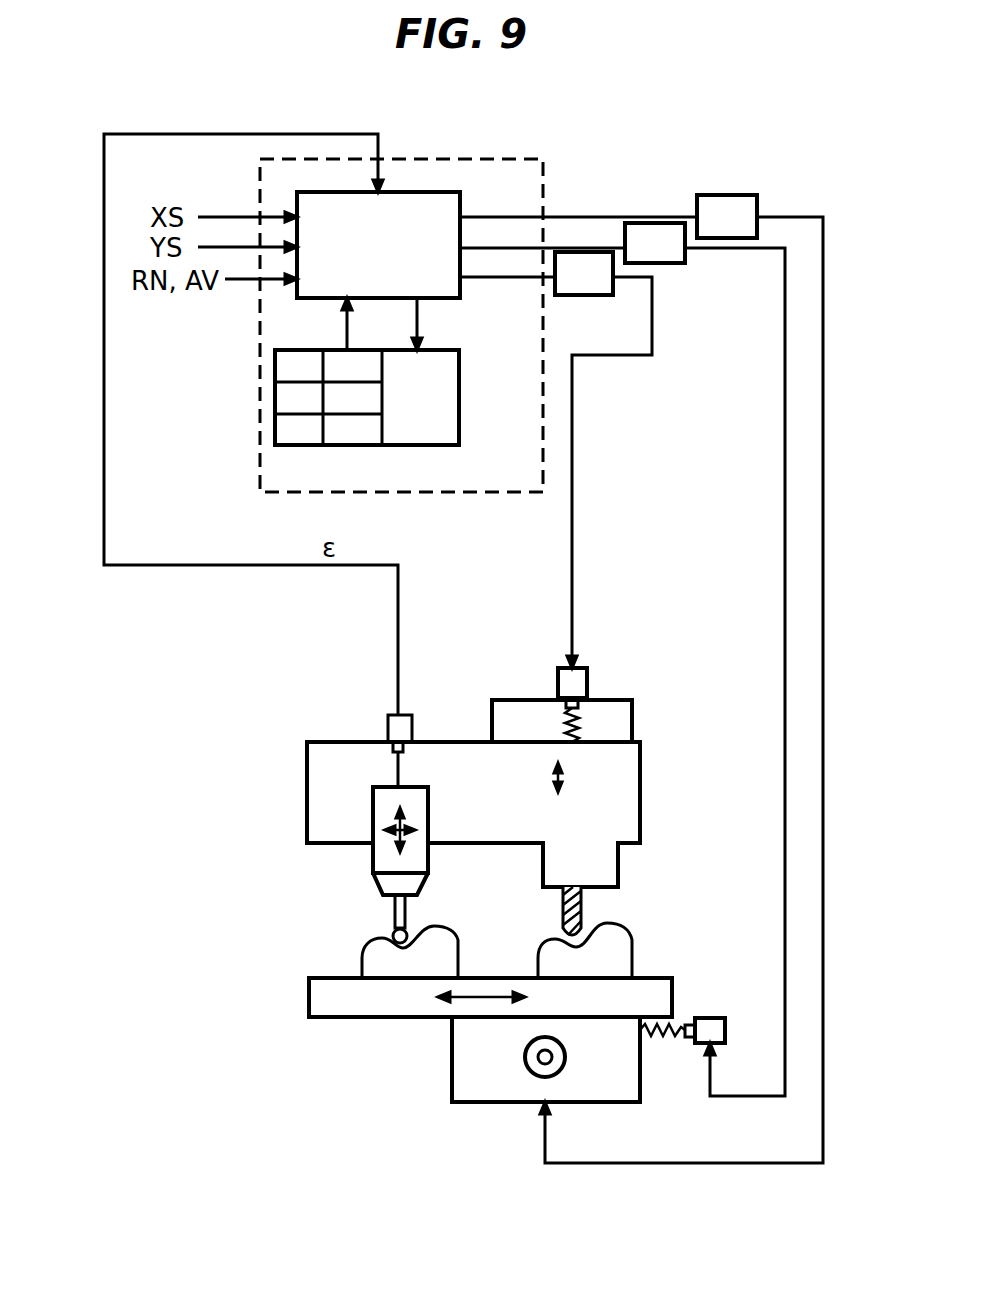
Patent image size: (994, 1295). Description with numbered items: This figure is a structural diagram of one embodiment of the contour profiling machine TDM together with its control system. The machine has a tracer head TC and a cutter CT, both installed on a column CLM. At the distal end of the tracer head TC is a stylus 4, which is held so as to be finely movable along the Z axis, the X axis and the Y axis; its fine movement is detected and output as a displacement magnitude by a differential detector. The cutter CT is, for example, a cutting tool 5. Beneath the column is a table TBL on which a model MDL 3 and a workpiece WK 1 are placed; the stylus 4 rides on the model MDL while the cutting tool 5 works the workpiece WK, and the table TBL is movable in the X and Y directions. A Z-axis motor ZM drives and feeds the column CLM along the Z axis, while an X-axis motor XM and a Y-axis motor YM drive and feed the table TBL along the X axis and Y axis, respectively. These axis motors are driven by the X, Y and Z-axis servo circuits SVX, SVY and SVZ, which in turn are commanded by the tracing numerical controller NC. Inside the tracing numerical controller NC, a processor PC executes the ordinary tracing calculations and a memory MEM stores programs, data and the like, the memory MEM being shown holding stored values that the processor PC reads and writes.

The tracing numerical controller NC is at (543, 160).
The processor PC is at (440, 290).
The memory MEM is at (425, 445).
The X-axis servo circuit SVX is at (665, 263).
The Y-axis servo circuit SVY is at (722, 195).
The Z-axis servo circuit SVZ is at (565, 295).
The contour profiling machine TDM is at (318, 672).
The Z-axis motor ZM is at (586, 676).
The column CLM is at (607, 800).
The tracer head TC is at (366, 869).
The stylus 4 is at (395, 912).
The model MDL is at (454, 936).
The model 3 is at (437, 938).
The cutter CT is at (636, 911).
The cutting tool 5 is at (588, 918).
The workpiece WK is at (635, 950).
The workpiece 1 is at (617, 950).
The table TBL is at (388, 1003).
The Y-axis motor YM is at (556, 1073).
The X-axis motor XM is at (707, 1018).